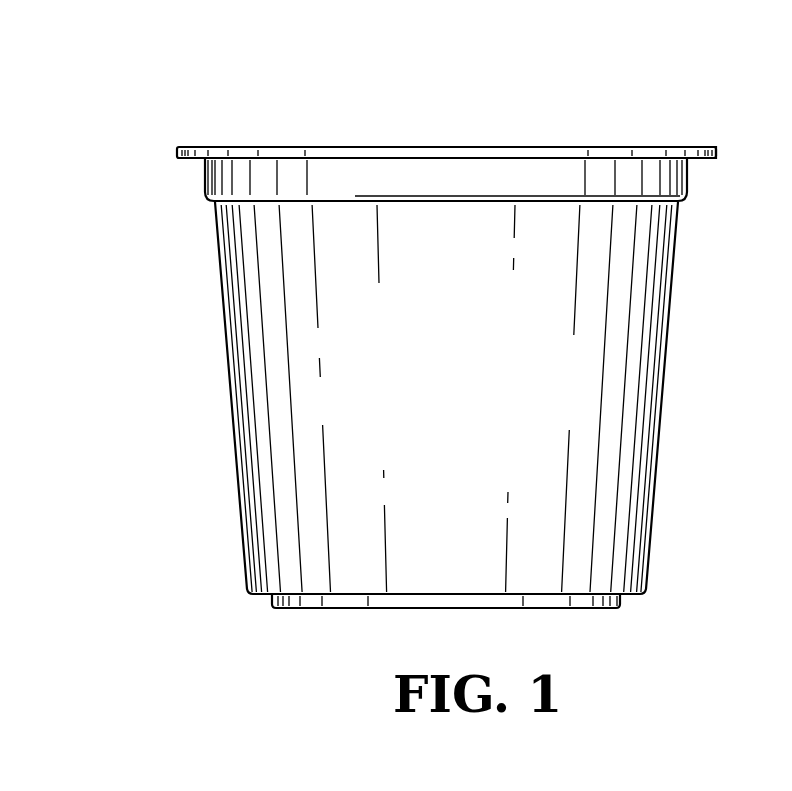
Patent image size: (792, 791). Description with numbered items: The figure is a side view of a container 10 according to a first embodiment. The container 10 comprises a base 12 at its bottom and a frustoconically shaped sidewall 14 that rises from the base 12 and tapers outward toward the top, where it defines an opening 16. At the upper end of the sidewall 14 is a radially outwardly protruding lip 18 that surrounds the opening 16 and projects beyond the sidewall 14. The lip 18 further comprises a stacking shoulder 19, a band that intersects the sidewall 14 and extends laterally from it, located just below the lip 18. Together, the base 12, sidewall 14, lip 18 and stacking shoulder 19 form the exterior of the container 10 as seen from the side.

The container 10 is at (453, 379).
The base 12 is at (648, 595).
The frustoconically shaped sidewall 14 is at (665, 390).
The opening 16 is at (508, 140).
The radially outwardly protruding lip 18 is at (720, 142).
The stacking shoulder 19 is at (688, 201).